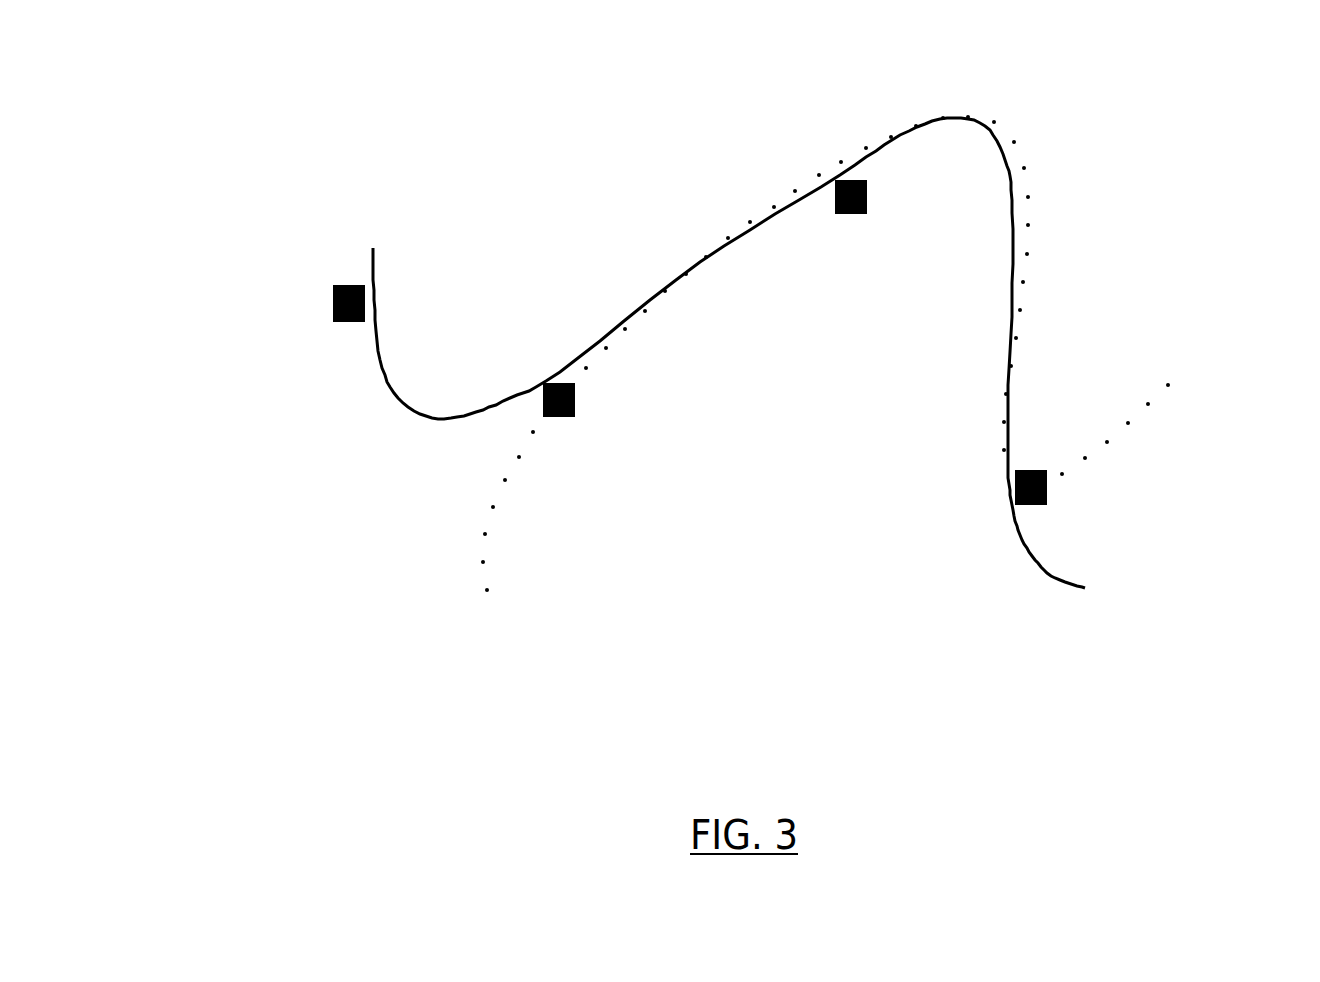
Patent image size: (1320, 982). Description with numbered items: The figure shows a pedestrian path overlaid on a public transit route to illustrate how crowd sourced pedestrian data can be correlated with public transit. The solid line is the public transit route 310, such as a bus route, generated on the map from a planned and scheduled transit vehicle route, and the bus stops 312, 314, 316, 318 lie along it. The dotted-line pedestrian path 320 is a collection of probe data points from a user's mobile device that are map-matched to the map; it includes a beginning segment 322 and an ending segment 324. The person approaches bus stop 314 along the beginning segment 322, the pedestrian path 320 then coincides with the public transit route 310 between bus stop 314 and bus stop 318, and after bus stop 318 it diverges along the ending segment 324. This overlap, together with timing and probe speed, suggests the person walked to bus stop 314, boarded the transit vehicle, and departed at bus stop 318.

The public transit route 310 is at (729, 353).
The bus stop 312 is at (292, 284).
The bus stop 314 is at (626, 433).
The bus stop 316 is at (843, 248).
The bus stop 318 is at (1002, 519).
The pedestrian path 320 is at (874, 248).
The beginning segment 322 is at (549, 521).
The ending segment 324 is at (1165, 429).